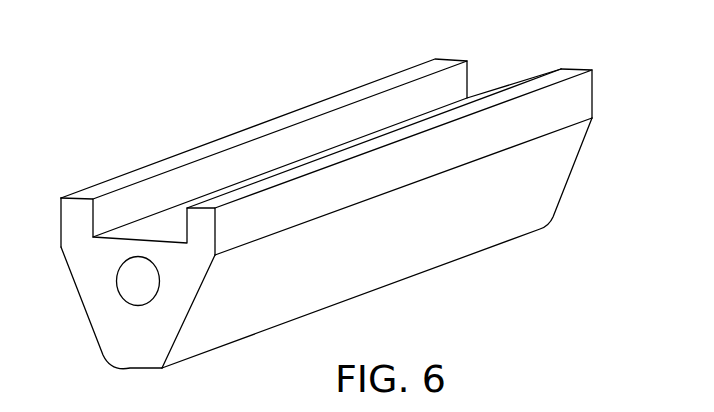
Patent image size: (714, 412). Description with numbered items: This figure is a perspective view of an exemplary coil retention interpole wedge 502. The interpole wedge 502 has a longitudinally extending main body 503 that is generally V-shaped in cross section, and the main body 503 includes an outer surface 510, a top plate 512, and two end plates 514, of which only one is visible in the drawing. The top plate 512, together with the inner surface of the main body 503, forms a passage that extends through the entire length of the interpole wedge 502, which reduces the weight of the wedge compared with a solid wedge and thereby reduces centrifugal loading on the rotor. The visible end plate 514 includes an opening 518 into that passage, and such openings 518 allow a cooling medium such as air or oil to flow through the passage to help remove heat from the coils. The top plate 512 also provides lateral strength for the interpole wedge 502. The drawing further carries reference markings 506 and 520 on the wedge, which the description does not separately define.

The interpole wedge 502 is at (227, 128).
The main body 503 is at (447, 147).
The lower slanted side surface 506 is at (392, 260).
The outer surface 510 is at (574, 90).
The top plate 512 is at (138, 225).
The end plate 514 is at (128, 338).
The opening 518 is at (128, 282).
The slanted flank 520 is at (187, 278).